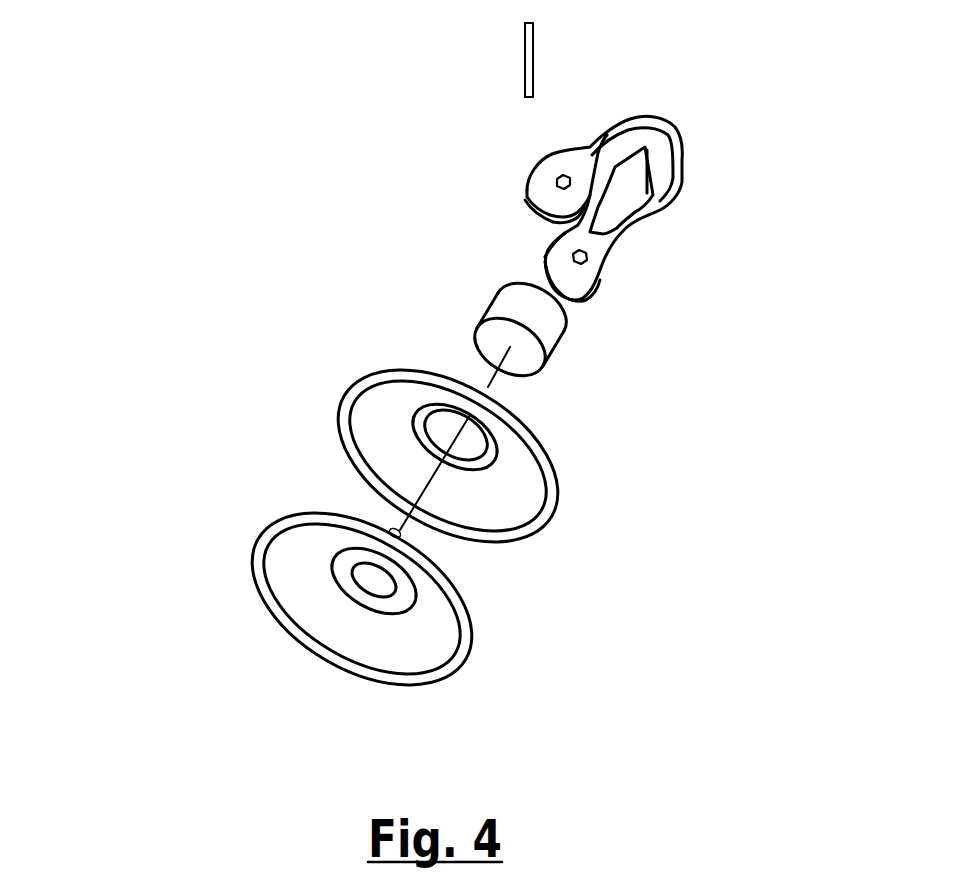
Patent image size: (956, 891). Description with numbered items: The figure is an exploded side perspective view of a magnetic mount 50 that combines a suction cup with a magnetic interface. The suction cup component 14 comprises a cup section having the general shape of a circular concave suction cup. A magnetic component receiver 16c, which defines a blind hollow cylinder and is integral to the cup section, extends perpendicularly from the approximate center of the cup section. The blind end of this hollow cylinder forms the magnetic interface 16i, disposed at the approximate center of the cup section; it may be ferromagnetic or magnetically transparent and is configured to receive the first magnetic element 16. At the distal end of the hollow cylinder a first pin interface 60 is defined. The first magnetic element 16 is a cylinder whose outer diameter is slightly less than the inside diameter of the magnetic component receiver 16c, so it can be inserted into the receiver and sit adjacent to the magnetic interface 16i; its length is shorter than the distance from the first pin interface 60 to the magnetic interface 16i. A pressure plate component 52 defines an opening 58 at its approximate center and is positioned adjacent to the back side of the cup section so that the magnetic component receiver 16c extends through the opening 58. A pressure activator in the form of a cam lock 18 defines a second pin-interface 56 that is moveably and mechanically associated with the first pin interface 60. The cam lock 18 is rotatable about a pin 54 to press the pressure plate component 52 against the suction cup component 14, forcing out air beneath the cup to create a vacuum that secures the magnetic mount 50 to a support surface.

The magnetic mount 50 is at (248, 193).
The suction cup component 14 is at (275, 523).
The first magnetic element 16 is at (497, 293).
The magnetic component receiver 16c is at (425, 545).
The magnetic interface 16i is at (408, 595).
The cam lock 18 is at (542, 158).
The pressure plate component 52 is at (353, 387).
The pin 54 is at (533, 53).
The second pin-interface 56 is at (587, 258).
The opening 58 is at (470, 448).
The first pin interface 60 is at (390, 530).